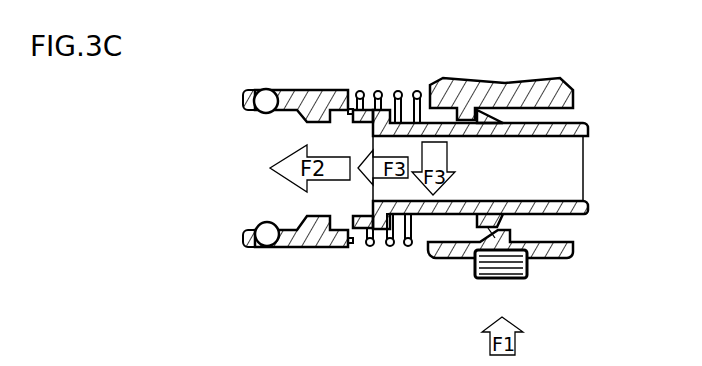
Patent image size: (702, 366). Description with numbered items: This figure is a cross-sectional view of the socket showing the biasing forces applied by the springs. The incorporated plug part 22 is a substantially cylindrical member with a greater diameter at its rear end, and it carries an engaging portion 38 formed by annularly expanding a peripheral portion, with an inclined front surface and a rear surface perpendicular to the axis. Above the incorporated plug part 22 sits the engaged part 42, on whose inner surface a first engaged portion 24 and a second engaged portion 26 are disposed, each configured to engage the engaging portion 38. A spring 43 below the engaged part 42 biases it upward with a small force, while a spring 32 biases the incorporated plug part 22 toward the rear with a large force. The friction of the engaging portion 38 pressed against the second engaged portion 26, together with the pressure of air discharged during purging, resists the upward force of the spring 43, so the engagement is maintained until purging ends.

The incorporated plug part 22 is at (295, 252).
The first engaged portion 24 is at (490, 213).
The second engaged portion 26 is at (465, 121).
The spring 32 is at (380, 90).
The engaging portion 38 is at (488, 120).
The engaged part 42 is at (474, 84).
The spring 43 is at (495, 279).